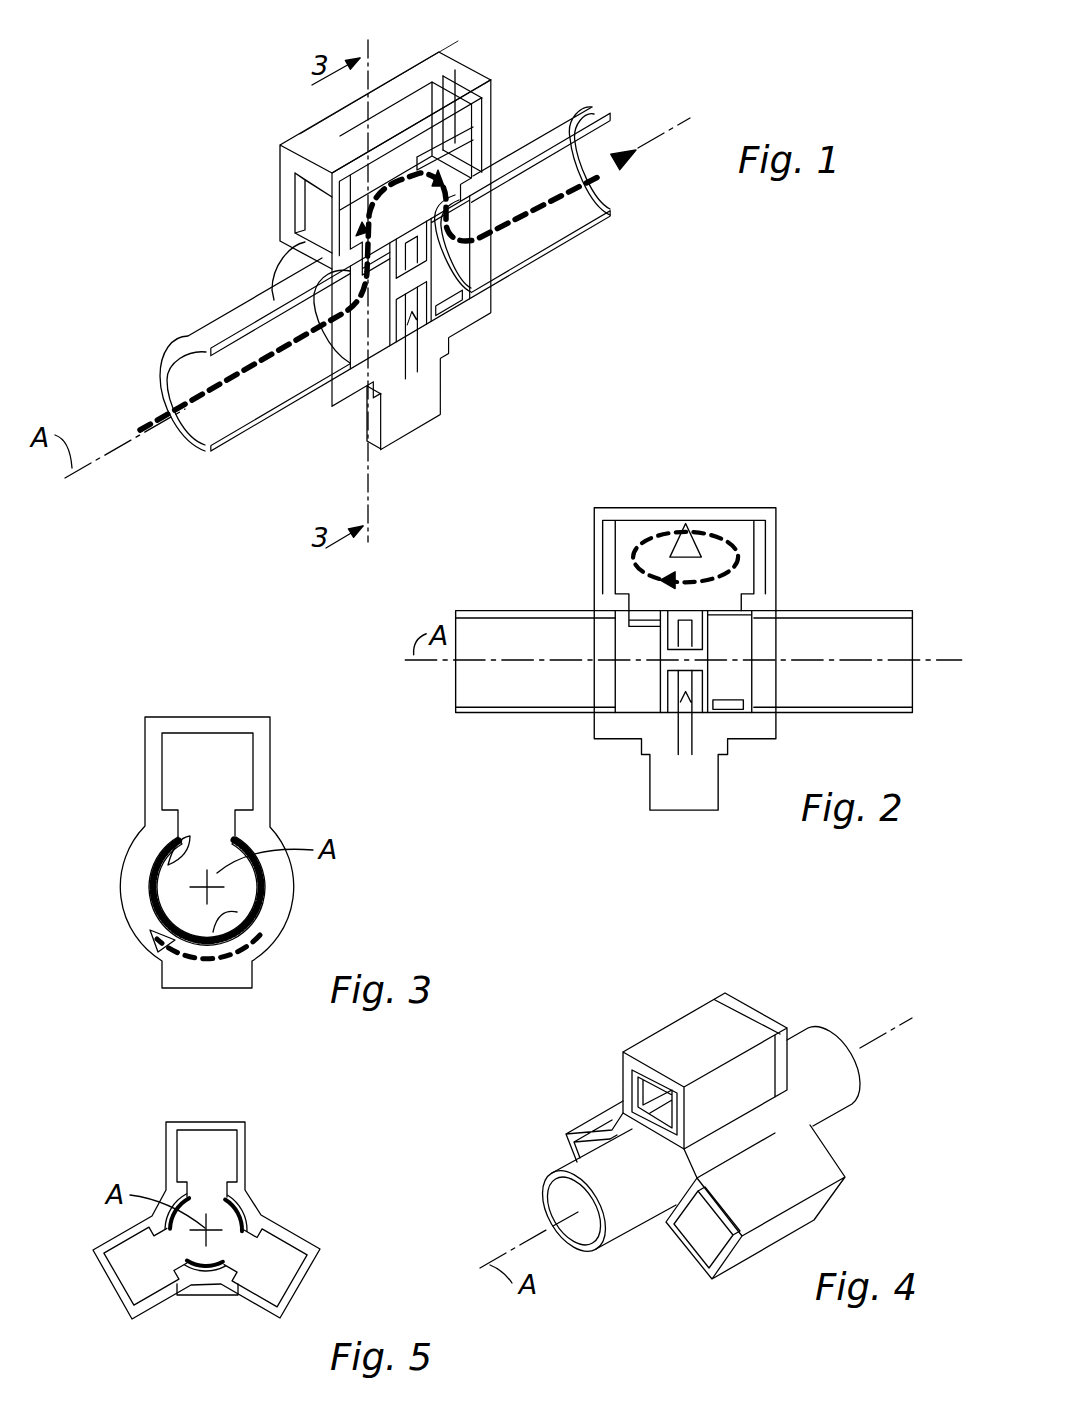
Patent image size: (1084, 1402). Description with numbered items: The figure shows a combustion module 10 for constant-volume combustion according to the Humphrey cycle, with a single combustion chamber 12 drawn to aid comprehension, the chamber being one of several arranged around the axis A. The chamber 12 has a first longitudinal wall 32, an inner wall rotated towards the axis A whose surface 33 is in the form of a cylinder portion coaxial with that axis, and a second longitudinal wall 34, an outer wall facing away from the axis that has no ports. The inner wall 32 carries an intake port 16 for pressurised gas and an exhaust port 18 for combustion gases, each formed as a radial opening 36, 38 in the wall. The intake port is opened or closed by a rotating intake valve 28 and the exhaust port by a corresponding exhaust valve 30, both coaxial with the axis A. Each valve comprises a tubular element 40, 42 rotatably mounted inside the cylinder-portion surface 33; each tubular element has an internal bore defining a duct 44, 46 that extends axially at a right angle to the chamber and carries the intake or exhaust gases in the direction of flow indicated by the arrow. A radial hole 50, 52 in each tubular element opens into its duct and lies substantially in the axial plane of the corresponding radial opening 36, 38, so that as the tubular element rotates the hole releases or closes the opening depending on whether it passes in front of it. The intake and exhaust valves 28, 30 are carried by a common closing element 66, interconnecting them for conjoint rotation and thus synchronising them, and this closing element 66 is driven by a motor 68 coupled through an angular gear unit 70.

In FIG. 1, the combustion module 10 is at (500, 52).
In FIG. 2, the combustion module 10 is at (786, 522).
In FIG. 3, the combustion module 10 is at (158, 682).
In FIG. 4, the combustion module 10 is at (778, 984).
In FIG. 5, the combustion module 10 is at (212, 1083).
In FIG. 1, the combustion chamber 12 is at (287, 140).
In FIG. 2, the combustion chamber 12 is at (750, 500).
In FIG. 3, the combustion chamber 12 is at (272, 752).
In FIG. 4, the combustion chamber 12 is at (681, 1040).
In FIG. 5, the combustion chamber 12 is at (227, 1120).
In FIG. 1, the intake port 16 is at (350, 212).
In FIG. 2, the intake port 16 is at (632, 596).
In FIG. 3, the intake port 16 is at (205, 810).
In FIG. 5, the intake port 16 is at (210, 1183).
In FIG. 1, the exhaust port 18 is at (452, 200).
In FIG. 2, the exhaust port 18 is at (712, 592).
In FIG. 1, the rotating intake valve 28 is at (358, 348).
In FIG. 2, the rotating intake valve 28 is at (630, 673).
In FIG. 3, the rotating intake valve 28 is at (165, 888).
In FIG. 5, the rotating intake valve 28 is at (213, 1242).
In FIG. 1, the exhaust valve 30 is at (457, 258).
In FIG. 2, the exhaust valve 30 is at (722, 630).
In FIG. 1, the first longitudinal wall 32 is at (395, 208).
In FIG. 2, the first longitudinal wall 32 is at (657, 592).
In FIG. 3, the first longitudinal wall 32 is at (243, 805).
In FIG. 5, the first longitudinal wall 32 is at (230, 1178).
In FIG. 1, the surface 33 is at (470, 222).
In FIG. 2, the surface 33 is at (604, 606).
In FIG. 3, the surface 33 is at (220, 838).
In FIG. 5, the surface 33 is at (193, 1203).
In FIG. 1, the second longitudinal wall 34 is at (427, 92).
In FIG. 2, the second longitudinal wall 34 is at (610, 505).
In FIG. 3, the second longitudinal wall 34 is at (235, 718).
In FIG. 5, the second longitudinal wall 34 is at (188, 1122).
In FIG. 2, the radial opening 36 is at (613, 613).
In FIG. 3, the radial opening 36 is at (225, 820).
In FIG. 5, the radial opening 36 is at (240, 1190).
In FIG. 2, the radial opening 38 is at (725, 596).
In FIG. 1, the tubular element 40 is at (208, 425).
In FIG. 2, the tubular element 40 is at (493, 703).
In FIG. 3, the tubular element 40 is at (268, 897).
In FIG. 5, the tubular element 40 is at (248, 1252).
In FIG. 1, the tubular element 42 is at (568, 210).
In FIG. 2, the tubular element 42 is at (848, 707).
In FIG. 1, the duct 44 is at (220, 412).
In FIG. 2, the duct 44 is at (477, 678).
In FIG. 3, the duct 44 is at (258, 918).
In FIG. 5, the duct 44 is at (168, 1222).
In FIG. 1, the duct 46 is at (598, 208).
In FIG. 2, the duct 46 is at (918, 720).
In FIG. 1, the radial hole 50 is at (352, 276).
In FIG. 2, the radial hole 50 is at (633, 618).
In FIG. 3, the radial hole 50 is at (180, 866).
In FIG. 1, the radial hole 52 is at (452, 300).
In FIG. 2, the radial hole 52 is at (720, 677).
In FIG. 1, the common closing element 66 is at (560, 258).
In FIG. 2, the common closing element 66 is at (547, 705).
In FIG. 4, the common closing element 66 is at (617, 1218).
In FIG. 1, the motor 68 is at (415, 412).
In FIG. 2, the motor 68 is at (663, 770).
In FIG. 1, the angular gear unit 70 is at (410, 322).
In FIG. 2, the angular gear unit 70 is at (673, 680).